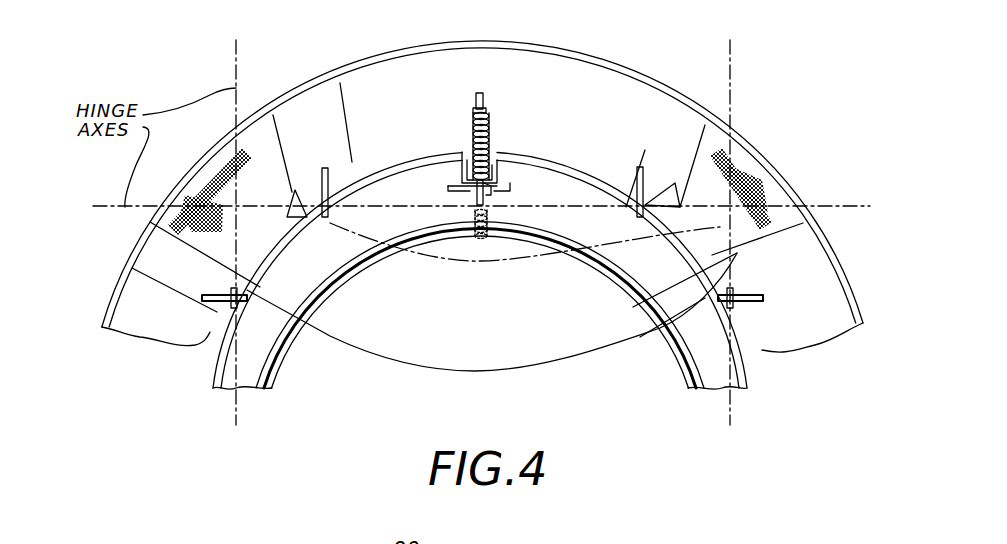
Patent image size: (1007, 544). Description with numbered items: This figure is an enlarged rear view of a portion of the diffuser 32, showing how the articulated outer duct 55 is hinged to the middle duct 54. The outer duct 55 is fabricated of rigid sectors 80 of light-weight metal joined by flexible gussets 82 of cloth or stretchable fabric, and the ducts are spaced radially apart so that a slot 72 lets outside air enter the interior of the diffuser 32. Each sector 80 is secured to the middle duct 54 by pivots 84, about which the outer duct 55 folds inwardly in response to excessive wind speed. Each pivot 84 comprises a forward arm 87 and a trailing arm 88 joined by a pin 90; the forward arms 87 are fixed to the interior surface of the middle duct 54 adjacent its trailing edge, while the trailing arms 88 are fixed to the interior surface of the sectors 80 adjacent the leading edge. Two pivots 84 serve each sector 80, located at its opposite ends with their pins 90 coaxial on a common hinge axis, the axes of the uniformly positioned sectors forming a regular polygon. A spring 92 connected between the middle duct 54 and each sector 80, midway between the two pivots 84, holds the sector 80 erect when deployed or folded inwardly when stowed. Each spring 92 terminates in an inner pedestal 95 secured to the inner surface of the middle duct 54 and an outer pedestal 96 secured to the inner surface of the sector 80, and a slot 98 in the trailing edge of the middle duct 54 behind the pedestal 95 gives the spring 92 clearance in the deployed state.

The diffuser 32 is at (783, 117).
The middle duct 54 is at (273, 373).
The outer duct 55 is at (651, 79).
The slot 72 is at (390, 173).
The sector 80 is at (396, 40).
The gusset 82 is at (207, 173).
The pivot 84 is at (331, 178).
The forward arm 87 is at (242, 290).
The trailing arm 88 is at (648, 172).
The pin 90 is at (637, 193).
The spring 92 is at (490, 143).
The inner pedestal 95 is at (470, 188).
The outer pedestal 96 is at (483, 100).
The slot 98 is at (490, 182).